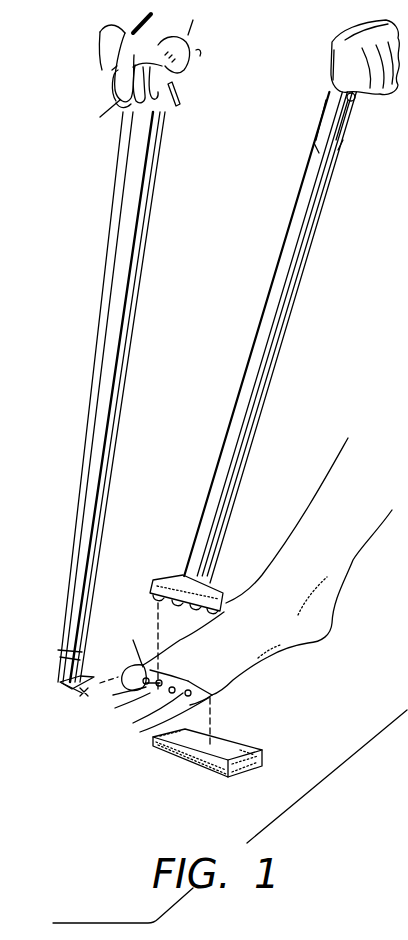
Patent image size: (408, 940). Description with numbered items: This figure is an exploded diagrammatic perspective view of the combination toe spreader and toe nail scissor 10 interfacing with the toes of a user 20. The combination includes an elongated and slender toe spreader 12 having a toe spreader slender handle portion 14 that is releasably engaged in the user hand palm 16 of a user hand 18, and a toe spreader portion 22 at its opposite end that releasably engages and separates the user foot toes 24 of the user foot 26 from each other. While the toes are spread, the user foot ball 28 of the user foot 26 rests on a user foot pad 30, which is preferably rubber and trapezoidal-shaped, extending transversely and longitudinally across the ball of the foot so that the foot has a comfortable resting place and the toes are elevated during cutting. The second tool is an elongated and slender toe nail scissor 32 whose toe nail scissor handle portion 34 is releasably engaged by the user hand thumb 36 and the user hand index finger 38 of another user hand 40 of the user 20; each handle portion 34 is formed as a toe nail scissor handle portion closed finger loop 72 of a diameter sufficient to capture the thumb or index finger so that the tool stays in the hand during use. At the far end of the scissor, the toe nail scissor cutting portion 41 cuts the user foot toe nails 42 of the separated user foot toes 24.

The combination toe spreader and toe nail scissor 10 is at (103, 748).
The toe spreader 12 is at (247, 300).
The toe spreader slender handle portion 14 is at (332, 115).
The user hand palm 16 is at (333, 67).
The user hand 18 is at (334, 48).
The user 20 is at (320, 35).
The toe spreader portion 22 is at (171, 578).
The user foot toes 24 is at (145, 695).
The user foot 26 is at (275, 627).
The user foot ball 28 is at (238, 686).
The user foot pad 30 is at (257, 754).
The toe nail scissor 32 is at (78, 318).
The toe nail scissor handle portion 34 is at (100, 92).
The user hand thumb 36 is at (192, 62).
The user hand index finger 38 is at (118, 100).
The another user hand 40 is at (131, 30).
The toe nail scissor cutting portion 41 is at (58, 706).
The user foot toe nails 42 is at (135, 668).
The toe nail scissor handle portion closed finger loop 72 is at (115, 72).